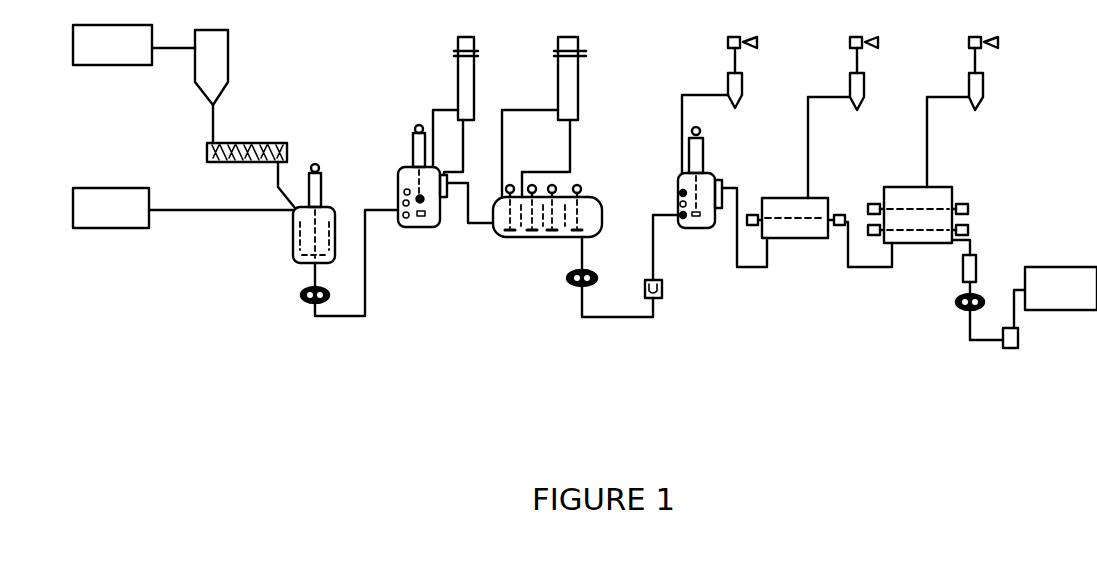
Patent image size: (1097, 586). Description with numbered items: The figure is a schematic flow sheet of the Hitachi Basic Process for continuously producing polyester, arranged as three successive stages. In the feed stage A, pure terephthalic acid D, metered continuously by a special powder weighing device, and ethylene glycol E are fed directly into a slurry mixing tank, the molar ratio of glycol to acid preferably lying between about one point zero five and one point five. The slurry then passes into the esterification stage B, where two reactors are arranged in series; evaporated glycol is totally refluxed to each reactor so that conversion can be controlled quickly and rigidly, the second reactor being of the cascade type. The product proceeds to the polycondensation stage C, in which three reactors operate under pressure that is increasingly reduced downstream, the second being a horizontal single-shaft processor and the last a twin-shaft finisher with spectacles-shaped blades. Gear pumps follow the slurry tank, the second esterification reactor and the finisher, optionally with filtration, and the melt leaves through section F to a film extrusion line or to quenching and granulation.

The feed stage A is at (177, 346).
The esterification stage B is at (390, 346).
The polycondensation stage C is at (1020, 346).
The pure terephthalic acid D is at (112, 45).
The ethylene glycol E is at (111, 208).
The polyester melt outlet section F is at (1061, 288).